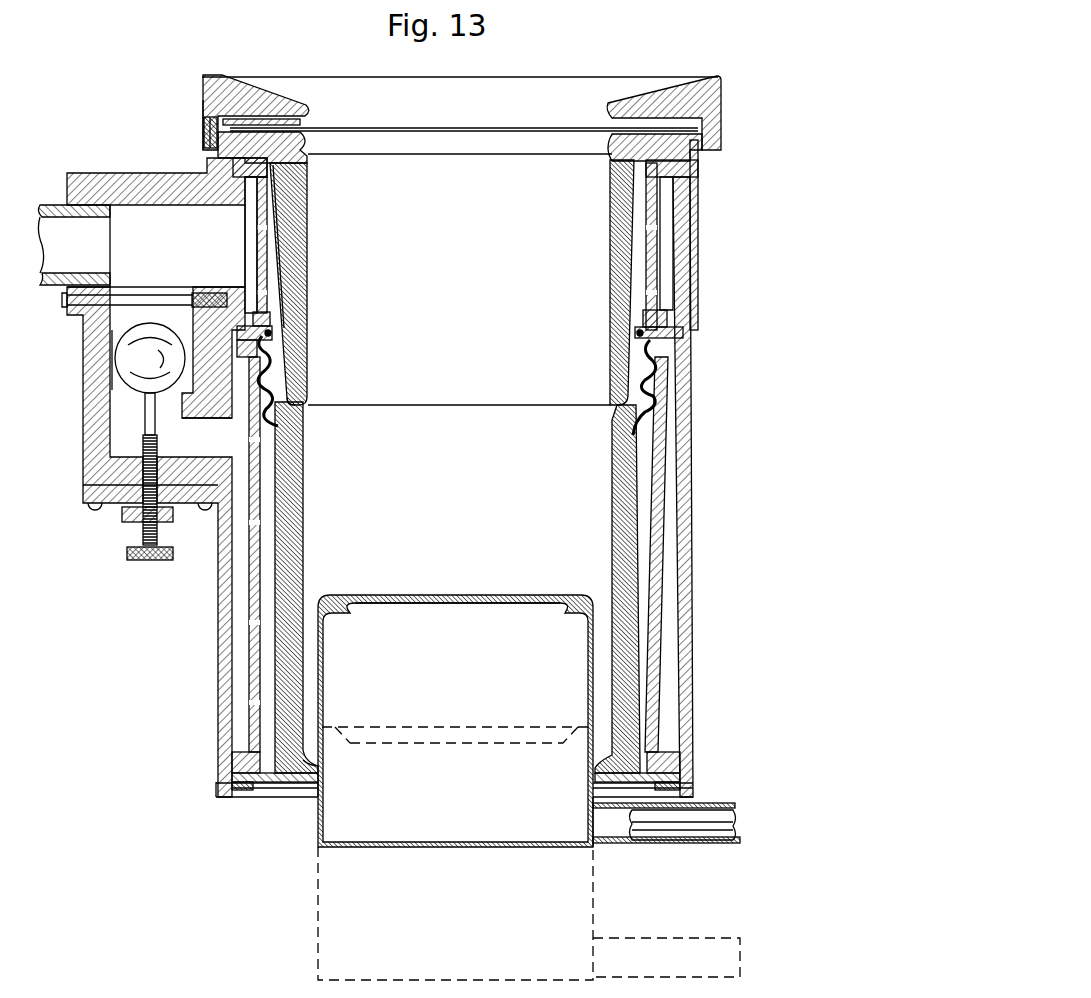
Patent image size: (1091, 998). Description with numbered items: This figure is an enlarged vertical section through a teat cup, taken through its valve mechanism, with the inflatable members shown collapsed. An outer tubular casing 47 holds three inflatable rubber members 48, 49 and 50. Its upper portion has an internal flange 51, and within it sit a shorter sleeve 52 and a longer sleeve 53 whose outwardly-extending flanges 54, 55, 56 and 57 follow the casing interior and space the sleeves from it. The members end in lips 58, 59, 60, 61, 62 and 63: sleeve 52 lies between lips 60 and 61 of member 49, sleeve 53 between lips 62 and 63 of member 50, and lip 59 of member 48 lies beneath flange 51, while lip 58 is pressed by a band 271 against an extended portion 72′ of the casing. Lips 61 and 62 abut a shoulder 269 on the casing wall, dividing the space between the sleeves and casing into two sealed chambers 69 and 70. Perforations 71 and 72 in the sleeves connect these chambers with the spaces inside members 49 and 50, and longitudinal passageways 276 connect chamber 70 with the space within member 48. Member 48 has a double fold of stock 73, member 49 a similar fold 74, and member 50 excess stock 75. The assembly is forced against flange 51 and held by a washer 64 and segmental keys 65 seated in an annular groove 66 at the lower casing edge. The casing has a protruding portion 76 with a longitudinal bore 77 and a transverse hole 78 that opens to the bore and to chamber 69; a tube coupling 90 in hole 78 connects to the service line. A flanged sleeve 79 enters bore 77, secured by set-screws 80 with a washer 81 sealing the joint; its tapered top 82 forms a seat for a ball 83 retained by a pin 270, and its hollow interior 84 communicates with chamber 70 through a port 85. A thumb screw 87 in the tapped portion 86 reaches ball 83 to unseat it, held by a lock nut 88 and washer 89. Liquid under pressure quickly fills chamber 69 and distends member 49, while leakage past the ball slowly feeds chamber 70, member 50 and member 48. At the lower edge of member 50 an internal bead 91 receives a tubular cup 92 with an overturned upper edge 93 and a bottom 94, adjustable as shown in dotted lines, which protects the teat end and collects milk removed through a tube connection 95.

The inflatable rubber member 48 is at (230, 93).
The band 271 is at (200, 97).
The double fold of stock 73 is at (267, 122).
The internal flange 51 is at (305, 117).
The lip 58 is at (207, 123).
The extended portion of casing 72′ is at (200, 132).
The lip 59 is at (310, 152).
The lip 60 is at (302, 157).
The outwardly-extending flange 54 is at (252, 168).
The transverse hole 78 is at (145, 218).
The tube coupling 90 is at (58, 205).
The pin 270 is at (143, 298).
The outwardly-extending flange 56 is at (192, 298).
The shoulder 269 is at (205, 333).
The inflatable rubber member 49 is at (295, 185).
The chamber 69 is at (250, 202).
The perforations 71 is at (270, 302).
The sleeve 52 is at (277, 300).
The outwardly-extending flange 55 is at (255, 330).
The lip 61 is at (272, 330).
The lip 62 is at (262, 338).
The fold of stock 74 is at (285, 372).
The excess stock 75 is at (290, 392).
The port 85 is at (213, 427).
The sleeve 53 is at (262, 473).
The chamber 70 is at (242, 504).
The inflatable rubber member 50 is at (292, 530).
The perforations 72 is at (253, 610).
The outer tubular casing 47 is at (223, 660).
The longitudinal passageways 276 is at (687, 242).
The protruding portion 76 is at (97, 410).
The longitudinal bore 77 is at (132, 318).
The ball 83 is at (140, 352).
The valve seat 82 is at (117, 380).
The hollow space 84 is at (138, 423).
The thumb screw 87 is at (148, 452).
The lock nut 88 is at (128, 522).
The flanged sleeve 79 is at (128, 480).
The washer 81 is at (82, 483).
The set-screws 80 is at (98, 505).
The washer 89 is at (172, 513).
The tapped portion 86 is at (165, 485).
The outwardly-extending flange 57 is at (245, 758).
The lip 63 is at (230, 777).
The annular groove 66 is at (227, 783).
The segmental keys 65 is at (242, 790).
The washer 64 is at (290, 790).
The tubular cup 92 is at (325, 665).
The overturned upper edge 93 is at (353, 605).
The bead 91 is at (320, 767).
The bottom 94 is at (463, 847).
The tube connection 95 is at (693, 820).